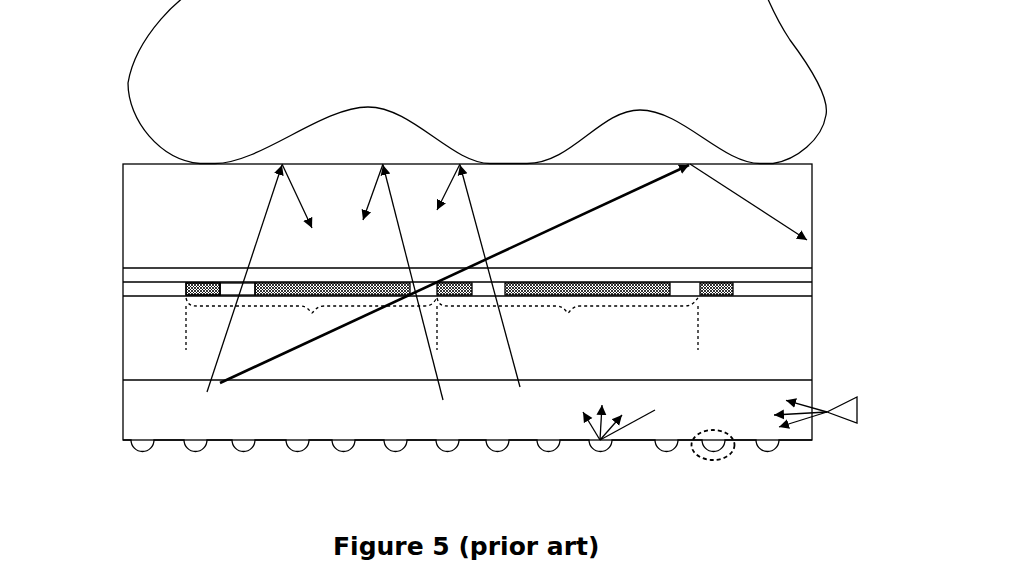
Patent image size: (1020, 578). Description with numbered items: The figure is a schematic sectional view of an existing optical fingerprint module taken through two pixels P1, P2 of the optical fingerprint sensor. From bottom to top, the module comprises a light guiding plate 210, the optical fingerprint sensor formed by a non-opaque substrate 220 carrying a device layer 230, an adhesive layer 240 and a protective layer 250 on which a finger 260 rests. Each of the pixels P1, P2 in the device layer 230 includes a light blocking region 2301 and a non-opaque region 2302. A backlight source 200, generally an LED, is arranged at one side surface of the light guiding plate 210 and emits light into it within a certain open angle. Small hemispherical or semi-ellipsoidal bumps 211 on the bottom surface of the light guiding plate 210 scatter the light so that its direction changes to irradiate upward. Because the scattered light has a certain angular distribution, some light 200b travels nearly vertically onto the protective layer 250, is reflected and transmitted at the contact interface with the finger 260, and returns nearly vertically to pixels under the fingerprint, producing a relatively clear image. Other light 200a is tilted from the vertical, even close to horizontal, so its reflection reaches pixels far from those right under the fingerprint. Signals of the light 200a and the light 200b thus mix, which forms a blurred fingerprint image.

The backlight source 200 is at (858, 431).
The light 200a is at (557, 228).
The light 200b is at (468, 193).
The light guiding plate 210 is at (793, 432).
The small bumps 211 is at (730, 453).
The non-opaque substrate 220 is at (797, 365).
The device layer 230 is at (773, 288).
The light blocking region 2301 is at (205, 289).
The non-opaque region 2302 is at (232, 289).
The adhesive layer 240 is at (773, 278).
The protective layer 250 is at (773, 191).
The finger 260 is at (773, 41).
The pixel P1 is at (311, 324).
The pixel P2 is at (567, 324).